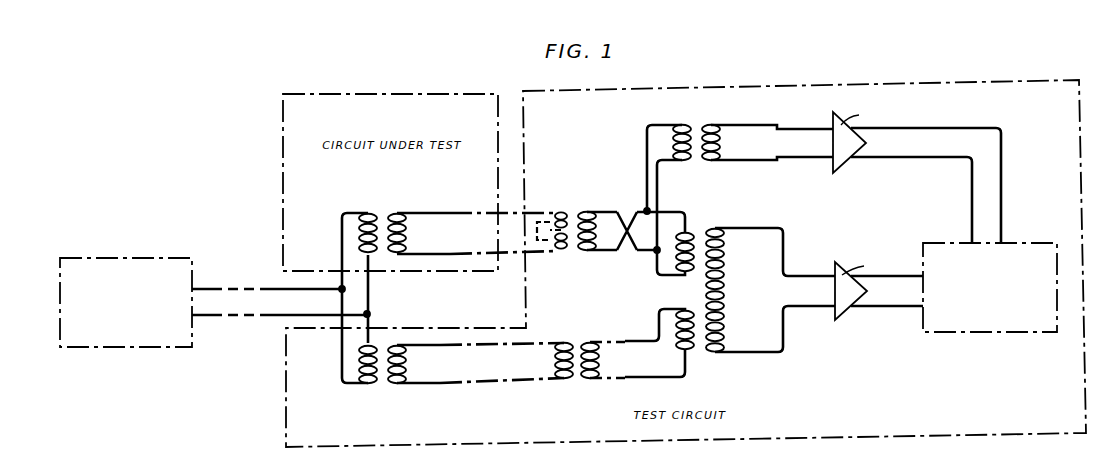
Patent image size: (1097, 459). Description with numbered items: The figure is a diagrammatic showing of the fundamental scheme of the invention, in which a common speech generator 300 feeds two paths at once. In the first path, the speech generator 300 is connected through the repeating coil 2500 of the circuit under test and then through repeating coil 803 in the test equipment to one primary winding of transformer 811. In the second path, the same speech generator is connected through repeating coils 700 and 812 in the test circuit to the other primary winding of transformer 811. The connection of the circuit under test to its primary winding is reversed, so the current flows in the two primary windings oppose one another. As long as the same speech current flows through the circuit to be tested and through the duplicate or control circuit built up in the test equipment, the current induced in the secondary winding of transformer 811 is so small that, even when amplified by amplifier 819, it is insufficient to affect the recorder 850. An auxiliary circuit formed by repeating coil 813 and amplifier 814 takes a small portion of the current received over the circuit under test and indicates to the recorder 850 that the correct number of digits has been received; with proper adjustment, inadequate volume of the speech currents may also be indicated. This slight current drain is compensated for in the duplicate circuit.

The speech generator 300 is at (142, 347).
The repeating coil 2500 is at (380, 215).
The repeating coil 700 is at (386, 386).
The repeating coil 803 is at (571, 209).
The transformer 811 is at (701, 226).
The repeating coil 812 is at (577, 341).
The repeating coil 813 is at (697, 124).
The amplifier 814 is at (838, 165).
The amplifier 819 is at (840, 308).
The recorder 850 is at (973, 333).